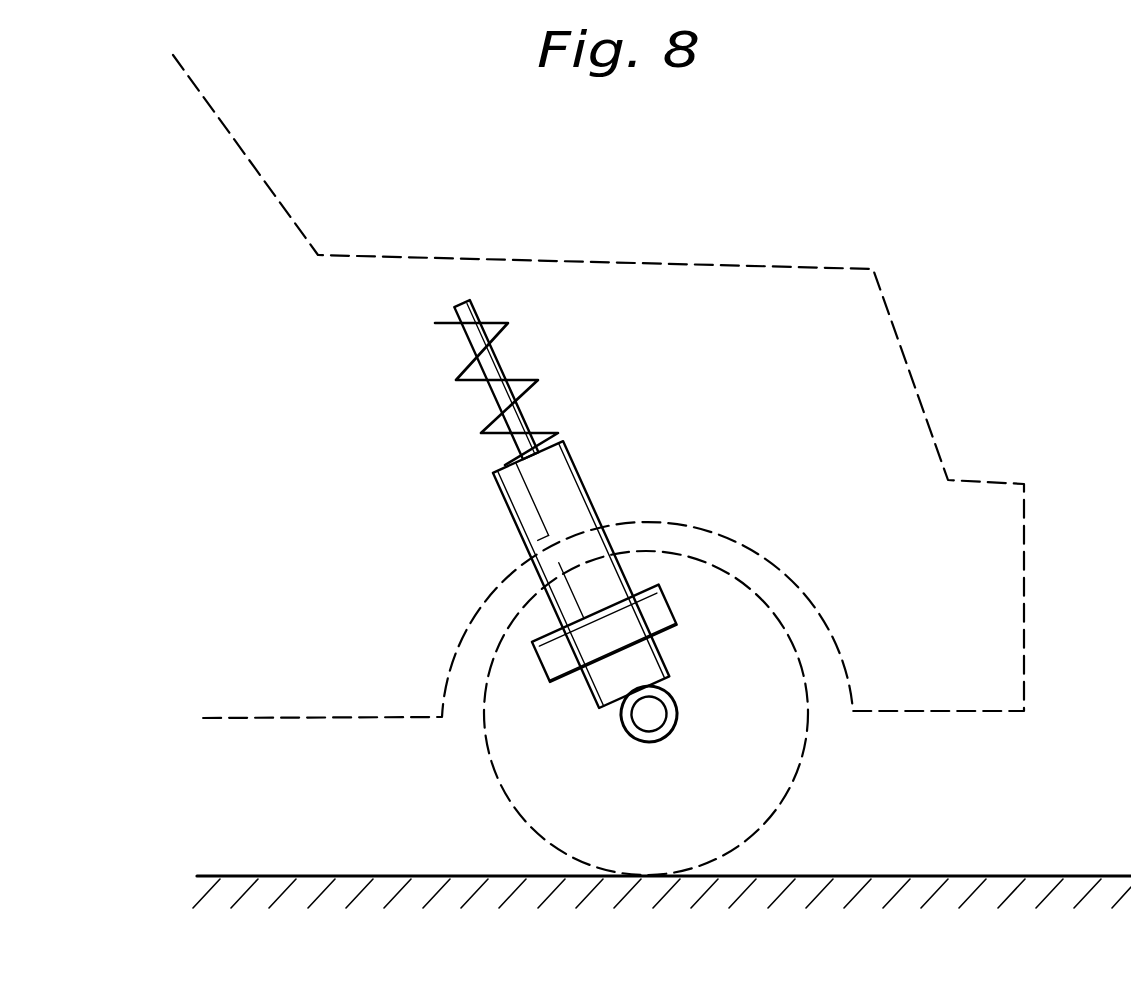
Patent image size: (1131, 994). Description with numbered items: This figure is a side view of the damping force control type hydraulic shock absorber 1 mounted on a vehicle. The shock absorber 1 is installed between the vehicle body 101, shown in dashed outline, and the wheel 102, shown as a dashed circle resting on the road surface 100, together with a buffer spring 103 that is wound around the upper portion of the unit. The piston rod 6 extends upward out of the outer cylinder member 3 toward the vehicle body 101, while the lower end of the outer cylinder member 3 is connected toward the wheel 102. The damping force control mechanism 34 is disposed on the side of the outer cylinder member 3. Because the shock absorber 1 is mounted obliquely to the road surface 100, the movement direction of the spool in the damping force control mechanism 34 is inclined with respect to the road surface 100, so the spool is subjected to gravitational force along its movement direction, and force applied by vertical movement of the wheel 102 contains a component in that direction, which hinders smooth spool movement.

The damping force control type hydraulic shock absorber 1 is at (565, 525).
The outer cylinder member 3 is at (520, 500).
The piston rod 6 is at (493, 365).
The damping force control mechanism 34 is at (668, 598).
The road surface 100 is at (1055, 875).
The vehicle body 101 is at (563, 287).
The wheel 102 is at (798, 765).
The buffer spring 103 is at (458, 379).